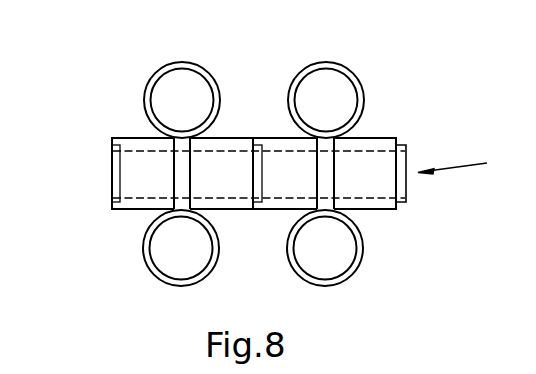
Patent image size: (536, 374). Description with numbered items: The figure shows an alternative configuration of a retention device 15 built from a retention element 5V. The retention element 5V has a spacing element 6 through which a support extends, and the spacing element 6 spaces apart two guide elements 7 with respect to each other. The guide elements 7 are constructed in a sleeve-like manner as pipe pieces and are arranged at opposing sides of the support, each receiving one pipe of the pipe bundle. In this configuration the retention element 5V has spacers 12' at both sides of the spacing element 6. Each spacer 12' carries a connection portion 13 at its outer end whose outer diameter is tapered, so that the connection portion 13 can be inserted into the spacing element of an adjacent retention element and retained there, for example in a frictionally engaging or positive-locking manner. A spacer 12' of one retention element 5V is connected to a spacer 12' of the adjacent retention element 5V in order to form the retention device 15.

The guide element 7 is at (293, 73).
The spacing element 6 is at (182, 172).
The retention element 5V is at (140, 165).
The spacer 12' is at (303, 205).
The connection portion 13 is at (402, 188).
The retention device 15 is at (468, 168).